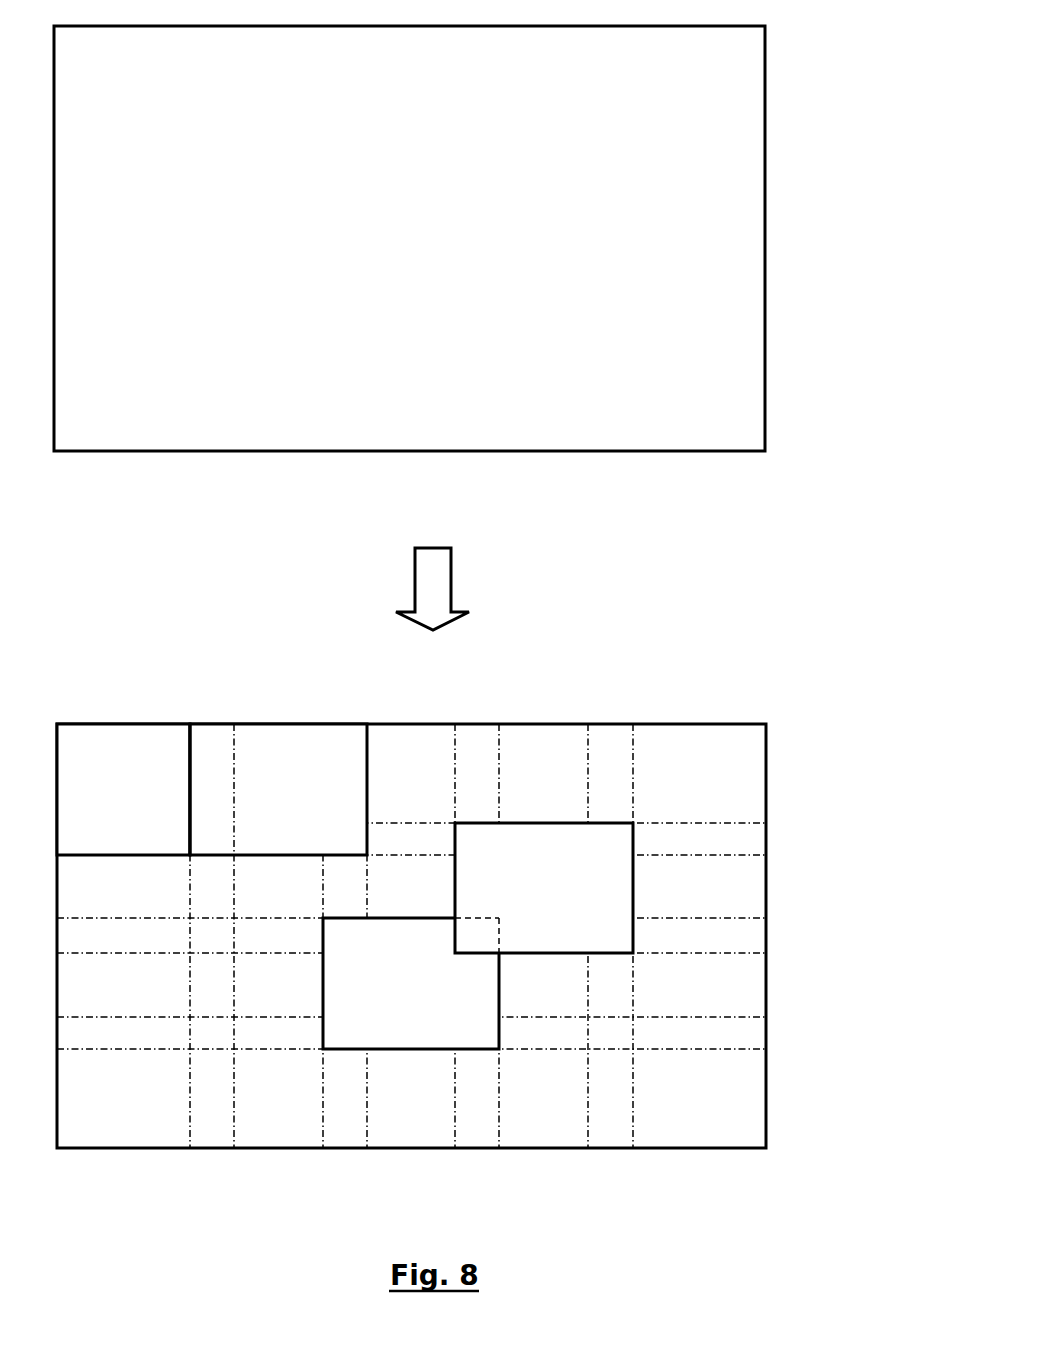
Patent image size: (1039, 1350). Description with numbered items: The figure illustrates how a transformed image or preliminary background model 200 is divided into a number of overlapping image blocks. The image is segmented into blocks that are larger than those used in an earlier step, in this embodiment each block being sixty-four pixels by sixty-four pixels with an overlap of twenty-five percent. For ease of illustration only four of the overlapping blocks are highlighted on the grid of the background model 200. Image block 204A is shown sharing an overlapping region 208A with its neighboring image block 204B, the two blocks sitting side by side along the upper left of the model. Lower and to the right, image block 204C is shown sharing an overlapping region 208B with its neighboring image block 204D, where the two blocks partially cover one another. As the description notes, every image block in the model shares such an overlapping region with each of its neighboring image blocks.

The transformed image or preliminary background model 200 is at (704, 708).
The image block 204A is at (171, 805).
The image block 204B is at (318, 805).
The image block 204C is at (588, 900).
The image block 204D is at (446, 1002).
The overlapping region 208A is at (201, 750).
The overlapping region 208B is at (492, 930).